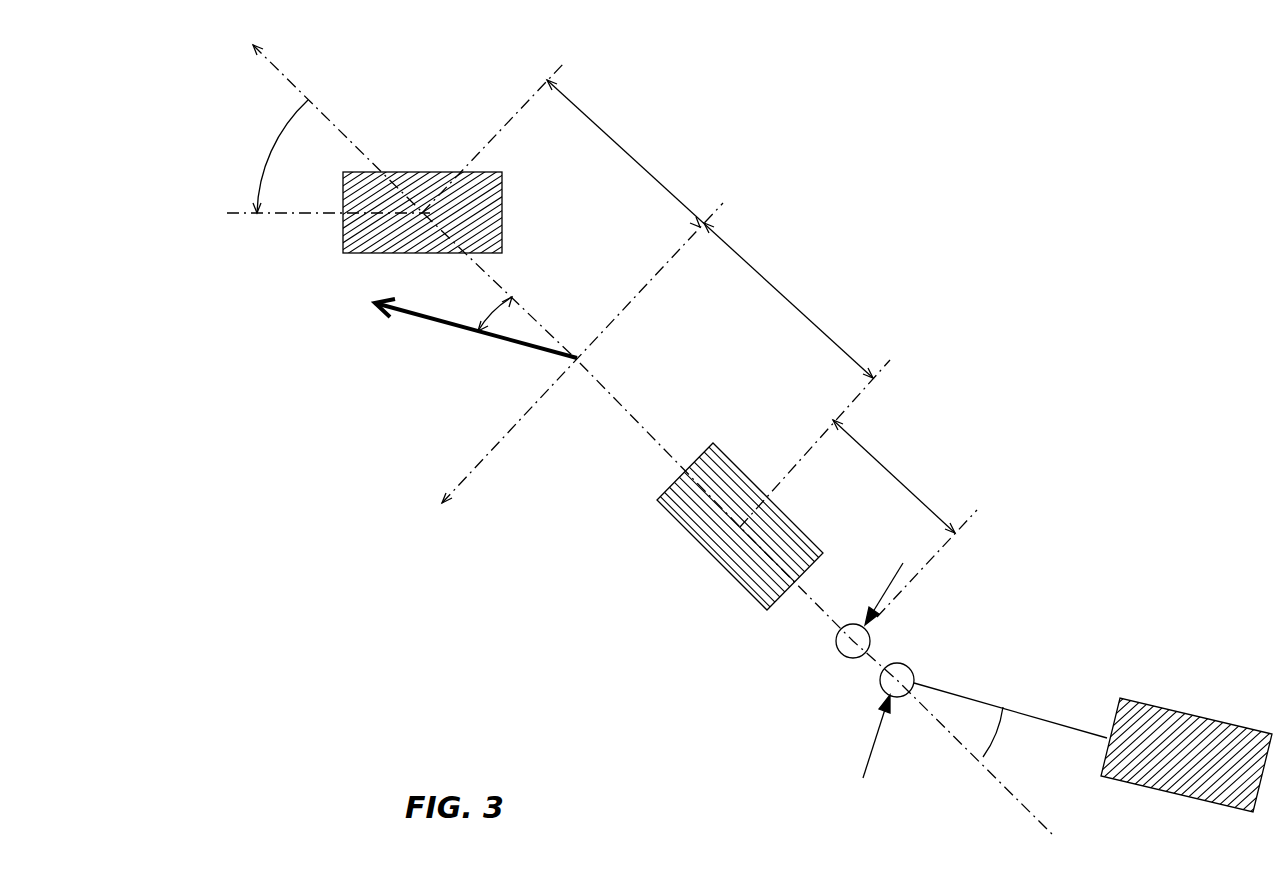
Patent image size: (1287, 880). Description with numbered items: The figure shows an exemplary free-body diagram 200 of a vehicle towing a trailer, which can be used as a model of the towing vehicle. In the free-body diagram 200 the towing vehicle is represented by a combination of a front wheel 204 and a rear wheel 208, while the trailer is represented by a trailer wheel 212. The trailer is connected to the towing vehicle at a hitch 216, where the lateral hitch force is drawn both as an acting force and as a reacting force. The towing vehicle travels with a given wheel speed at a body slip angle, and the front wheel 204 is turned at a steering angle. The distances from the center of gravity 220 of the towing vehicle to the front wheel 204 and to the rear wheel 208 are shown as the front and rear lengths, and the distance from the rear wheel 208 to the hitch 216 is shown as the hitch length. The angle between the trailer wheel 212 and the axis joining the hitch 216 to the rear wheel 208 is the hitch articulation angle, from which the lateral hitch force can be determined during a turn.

The free-body diagram 200 is at (958, 296).
The front wheel 204 is at (403, 172).
The rear wheel 208 is at (712, 442).
The trailer wheel 212 is at (1158, 703).
The hitch 216 is at (835, 645).
The center of gravity 220 is at (573, 367).